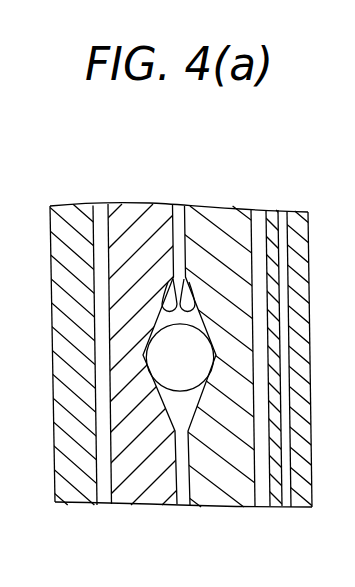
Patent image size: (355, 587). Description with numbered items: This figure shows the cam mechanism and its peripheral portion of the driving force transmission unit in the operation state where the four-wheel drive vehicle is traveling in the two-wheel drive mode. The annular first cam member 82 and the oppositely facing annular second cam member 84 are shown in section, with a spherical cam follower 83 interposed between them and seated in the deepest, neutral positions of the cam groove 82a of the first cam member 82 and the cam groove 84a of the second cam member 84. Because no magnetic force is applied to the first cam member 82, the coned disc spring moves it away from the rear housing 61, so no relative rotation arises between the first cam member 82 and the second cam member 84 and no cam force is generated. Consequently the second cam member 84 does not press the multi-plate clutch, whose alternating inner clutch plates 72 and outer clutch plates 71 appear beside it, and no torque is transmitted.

The rear housing 61 is at (77, 493).
The first cam member 82 is at (140, 492).
The second cam member 84 is at (213, 490).
The cam groove of the first cam member 82a is at (166, 284).
The cam groove of the second cam member 84a is at (190, 284).
The cam follower 83 is at (180, 381).
The inner clutch plate 72 is at (275, 497).
The outer clutch plate 71 is at (300, 498).